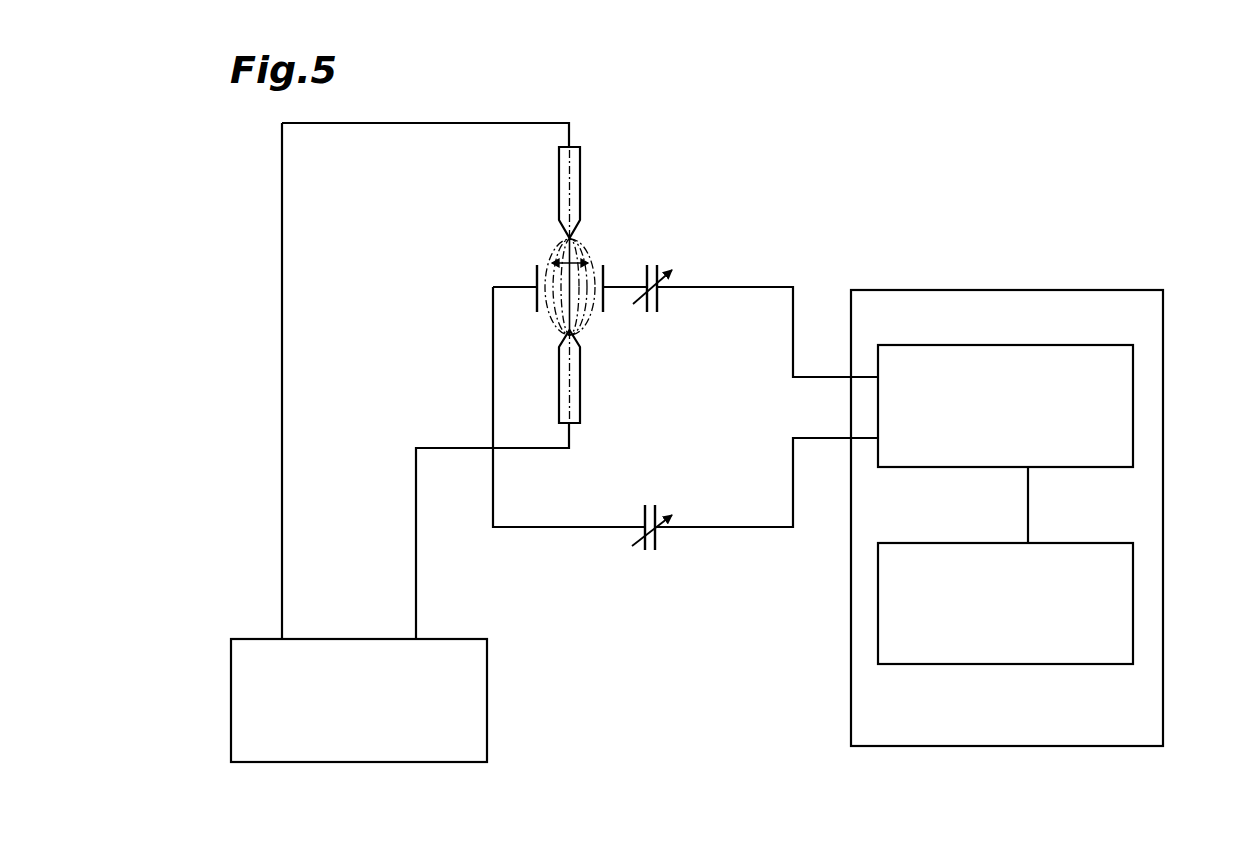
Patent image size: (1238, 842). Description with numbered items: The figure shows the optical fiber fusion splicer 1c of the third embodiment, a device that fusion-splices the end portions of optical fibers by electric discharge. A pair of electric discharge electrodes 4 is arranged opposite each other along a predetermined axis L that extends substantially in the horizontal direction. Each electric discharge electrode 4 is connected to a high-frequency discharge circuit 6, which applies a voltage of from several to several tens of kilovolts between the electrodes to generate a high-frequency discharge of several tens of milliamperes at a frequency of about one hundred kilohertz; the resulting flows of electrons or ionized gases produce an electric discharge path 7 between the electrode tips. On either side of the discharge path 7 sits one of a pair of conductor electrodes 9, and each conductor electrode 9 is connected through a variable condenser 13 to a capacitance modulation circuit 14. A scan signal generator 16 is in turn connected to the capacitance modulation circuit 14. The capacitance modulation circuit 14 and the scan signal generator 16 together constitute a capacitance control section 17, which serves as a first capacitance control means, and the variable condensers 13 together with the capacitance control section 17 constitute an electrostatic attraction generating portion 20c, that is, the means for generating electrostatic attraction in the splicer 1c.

The optical fiber fusion splicer 1c is at (836, 172).
The electric discharge electrode 4 is at (575, 168).
The predetermined axis L is at (556, 178).
The electric discharge path 7 is at (558, 247).
The conductor electrode 9 is at (535, 298).
The variable condenser 13 is at (660, 268).
The high-frequency discharge circuit 6 is at (487, 716).
The electrostatic attraction generating portion 20c is at (948, 268).
The capacitance modulation circuit 14 is at (1133, 412).
The scan signal generator 16 is at (1133, 613).
The capacitance control section 17 is at (1003, 748).